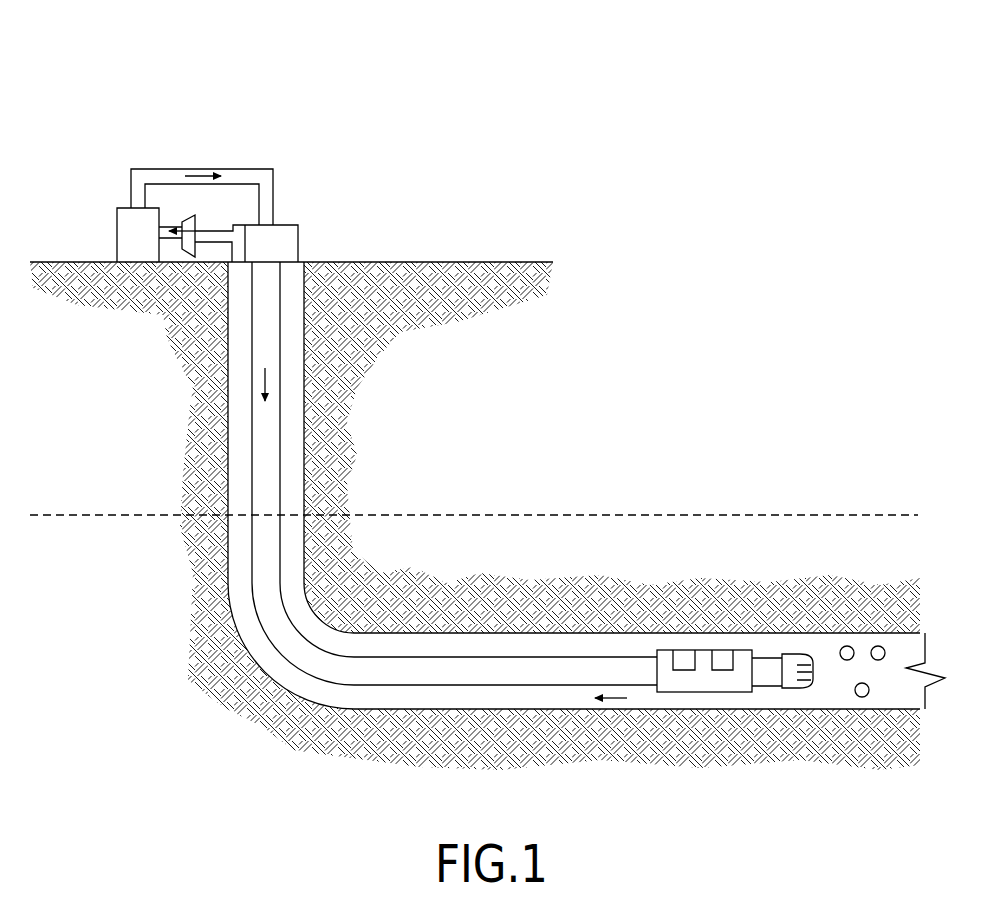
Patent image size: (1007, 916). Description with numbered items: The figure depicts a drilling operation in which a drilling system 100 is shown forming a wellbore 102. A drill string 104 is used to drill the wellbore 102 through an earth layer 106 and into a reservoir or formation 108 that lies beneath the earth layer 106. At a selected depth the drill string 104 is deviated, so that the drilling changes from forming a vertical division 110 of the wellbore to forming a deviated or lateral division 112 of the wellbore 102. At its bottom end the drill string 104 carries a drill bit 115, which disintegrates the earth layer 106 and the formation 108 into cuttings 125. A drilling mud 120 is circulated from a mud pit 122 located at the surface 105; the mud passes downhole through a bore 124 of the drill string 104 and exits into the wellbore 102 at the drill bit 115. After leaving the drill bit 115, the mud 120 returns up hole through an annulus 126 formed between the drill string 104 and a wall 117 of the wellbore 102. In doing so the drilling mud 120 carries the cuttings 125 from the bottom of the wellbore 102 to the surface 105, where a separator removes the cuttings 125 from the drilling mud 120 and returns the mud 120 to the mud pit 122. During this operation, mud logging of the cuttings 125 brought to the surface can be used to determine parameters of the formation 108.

The drilling system 100 is at (137, 100).
The wellbore 102 is at (305, 428).
The drill string 104 is at (280, 480).
The surface 105 is at (88, 261).
The earth layer 106 is at (638, 456).
The reservoir or formation 108 is at (638, 558).
The vertical division 110 is at (228, 538).
The deviated or lateral division 112 is at (443, 633).
The drill bit 115 is at (794, 690).
The wall 117 is at (318, 708).
The drilling mud 120 is at (265, 382).
The mud pit 122 is at (132, 252).
The bore 124 is at (266, 442).
The cuttings 125 is at (847, 645).
The annulus 126 is at (450, 695).